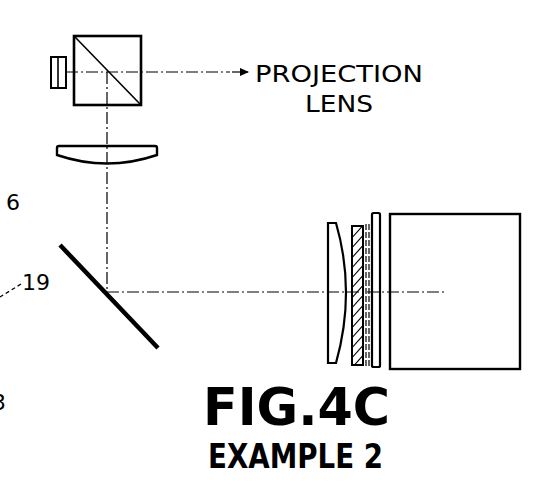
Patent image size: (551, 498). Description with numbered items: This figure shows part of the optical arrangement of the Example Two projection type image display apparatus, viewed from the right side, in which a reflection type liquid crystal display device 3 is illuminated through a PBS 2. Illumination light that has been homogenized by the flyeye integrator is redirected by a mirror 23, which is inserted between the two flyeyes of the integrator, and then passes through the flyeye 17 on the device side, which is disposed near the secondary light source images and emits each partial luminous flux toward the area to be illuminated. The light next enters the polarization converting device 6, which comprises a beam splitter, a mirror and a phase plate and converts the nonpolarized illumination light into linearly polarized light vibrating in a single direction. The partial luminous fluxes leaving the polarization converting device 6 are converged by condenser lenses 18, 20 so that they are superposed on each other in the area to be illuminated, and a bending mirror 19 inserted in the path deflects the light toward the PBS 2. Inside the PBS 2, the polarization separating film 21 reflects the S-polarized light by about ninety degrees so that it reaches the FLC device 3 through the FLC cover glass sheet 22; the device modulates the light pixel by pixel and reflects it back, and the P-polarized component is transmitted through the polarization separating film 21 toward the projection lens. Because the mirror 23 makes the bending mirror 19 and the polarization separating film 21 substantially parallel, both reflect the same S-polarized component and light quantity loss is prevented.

The PBS 2 is at (130, 47).
The polarization separating film 21 is at (133, 90).
The reflection type liquid crystal display device 3 is at (52, 80).
The FLC cover glass sheet 22 is at (62, 60).
The condenser lens 20 is at (148, 158).
The bending mirror 19 is at (147, 328).
The condenser lens 18 is at (328, 230).
The polarization converting device 6 is at (353, 226).
The flyeye 17 is at (375, 214).
The mirror 23 is at (445, 228).